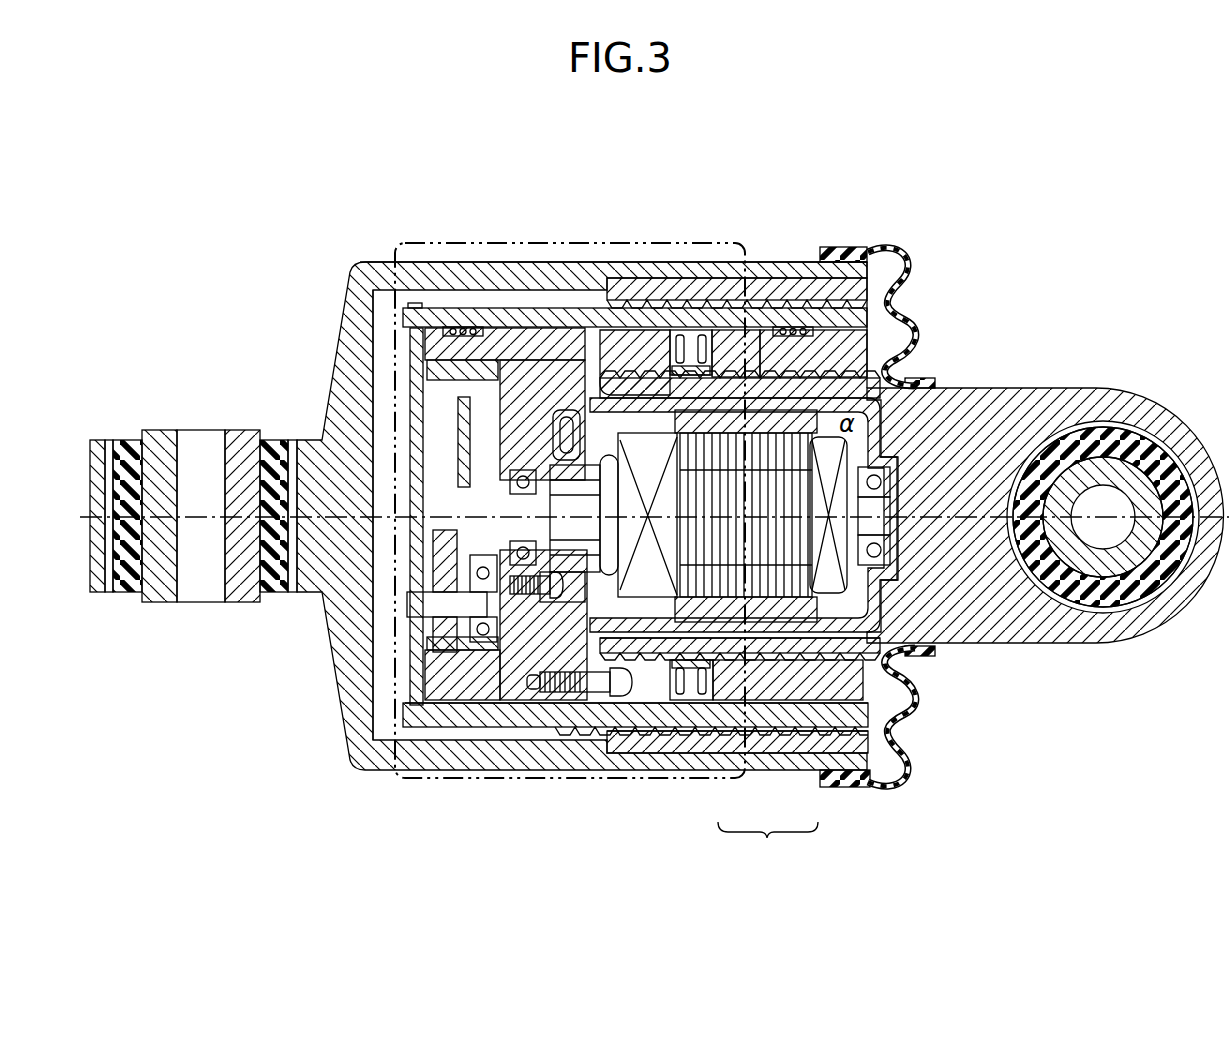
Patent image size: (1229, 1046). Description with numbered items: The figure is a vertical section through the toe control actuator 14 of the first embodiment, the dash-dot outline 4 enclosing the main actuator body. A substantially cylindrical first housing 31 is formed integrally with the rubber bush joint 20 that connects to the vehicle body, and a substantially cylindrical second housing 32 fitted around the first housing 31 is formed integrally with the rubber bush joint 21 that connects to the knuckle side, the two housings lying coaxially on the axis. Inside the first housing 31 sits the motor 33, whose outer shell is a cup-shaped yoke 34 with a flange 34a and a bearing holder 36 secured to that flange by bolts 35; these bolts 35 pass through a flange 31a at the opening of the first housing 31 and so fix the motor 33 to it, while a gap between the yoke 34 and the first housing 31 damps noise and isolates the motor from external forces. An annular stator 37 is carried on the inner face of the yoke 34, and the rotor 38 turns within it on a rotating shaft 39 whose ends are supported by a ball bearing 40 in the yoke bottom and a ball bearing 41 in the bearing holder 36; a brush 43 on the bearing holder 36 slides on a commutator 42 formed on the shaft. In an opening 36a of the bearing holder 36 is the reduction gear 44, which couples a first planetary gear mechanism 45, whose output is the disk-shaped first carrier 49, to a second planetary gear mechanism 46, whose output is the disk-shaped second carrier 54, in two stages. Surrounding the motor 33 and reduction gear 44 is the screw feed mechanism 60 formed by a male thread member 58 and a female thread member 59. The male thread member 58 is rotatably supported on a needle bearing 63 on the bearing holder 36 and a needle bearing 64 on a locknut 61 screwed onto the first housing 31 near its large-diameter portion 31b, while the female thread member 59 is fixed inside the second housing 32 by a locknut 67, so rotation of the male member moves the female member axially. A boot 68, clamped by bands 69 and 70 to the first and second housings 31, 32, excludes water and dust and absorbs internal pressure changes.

The electric motor 4 is at (700, 238).
The toe control actuator 14 is at (547, 228).
The rubber bush joint 20 is at (1117, 422).
The rubber bush joint 21 is at (158, 426).
The first housing 31 is at (830, 365).
The flange 31a is at (615, 740).
The large-diameter portion 31b is at (660, 335).
The second housing 32 is at (457, 258).
The motor 33 is at (758, 390).
The yoke 34 is at (850, 642).
The flange 34a is at (610, 347).
The bolts 35 is at (598, 694).
The bearing holder 36 is at (547, 328).
The opening 36a is at (412, 378).
The stator 37 is at (677, 420).
The rotor 38 is at (775, 592).
The rotating shaft 39 is at (550, 502).
The ball bearing 40 is at (880, 552).
The ball bearing 41 is at (520, 476).
The commutator 42 is at (587, 535).
The brush 43 is at (592, 452).
The reduction gear 44 is at (478, 663).
The first planetary gear mechanism 45 is at (493, 600).
The second planetary gear mechanism 46 is at (402, 612).
The first carrier 49 is at (462, 430).
The second carrier 54 is at (418, 415).
The male thread member 58 is at (815, 718).
The female thread member 59 is at (730, 748).
The screw feed mechanism 60 is at (768, 842).
The locknut 61 is at (872, 352).
The needle bearing 63 is at (467, 330).
The needle bearing 64 is at (790, 328).
The locknut 67 is at (840, 788).
The boot 68 is at (898, 258).
The band 69 is at (925, 382).
The band 70 is at (845, 246).